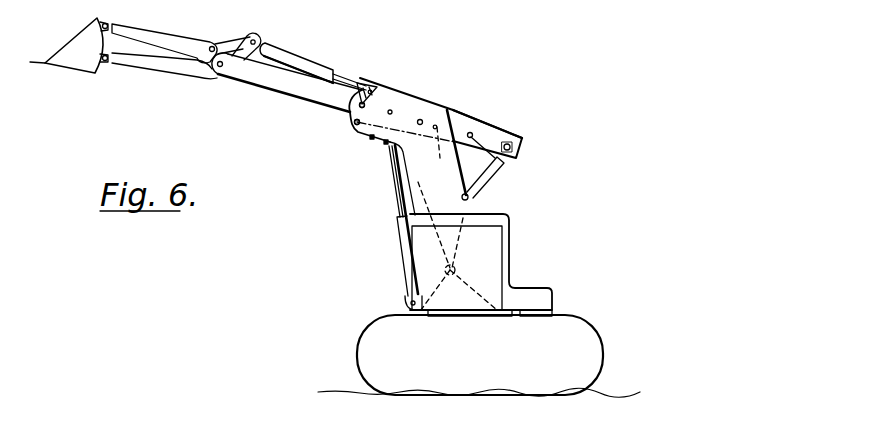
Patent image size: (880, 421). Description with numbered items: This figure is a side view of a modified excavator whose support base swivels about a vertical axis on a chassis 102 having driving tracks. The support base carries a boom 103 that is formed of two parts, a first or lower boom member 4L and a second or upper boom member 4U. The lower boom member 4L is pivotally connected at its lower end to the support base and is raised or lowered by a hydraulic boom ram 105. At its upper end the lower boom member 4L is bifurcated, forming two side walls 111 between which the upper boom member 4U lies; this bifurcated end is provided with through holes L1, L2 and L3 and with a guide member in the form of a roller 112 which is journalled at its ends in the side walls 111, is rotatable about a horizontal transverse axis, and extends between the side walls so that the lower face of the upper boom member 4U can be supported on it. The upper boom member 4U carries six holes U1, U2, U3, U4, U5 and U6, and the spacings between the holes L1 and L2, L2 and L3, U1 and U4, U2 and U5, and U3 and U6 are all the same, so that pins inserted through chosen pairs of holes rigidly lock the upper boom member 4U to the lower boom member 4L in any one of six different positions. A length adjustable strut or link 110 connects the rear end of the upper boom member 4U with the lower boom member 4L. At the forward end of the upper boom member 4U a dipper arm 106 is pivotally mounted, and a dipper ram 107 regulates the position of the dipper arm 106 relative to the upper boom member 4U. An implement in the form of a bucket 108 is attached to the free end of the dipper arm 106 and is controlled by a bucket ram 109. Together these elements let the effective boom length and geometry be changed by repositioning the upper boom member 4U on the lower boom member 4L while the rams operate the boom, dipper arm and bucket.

The chassis 102 is at (386, 330).
The boom 103 is at (418, 207).
The hydraulic boom ram 105 is at (405, 261).
The dipper arm 106 is at (182, 63).
The dipper ram 107 is at (288, 55).
The bucket 108 is at (73, 62).
The bucket ram 109 is at (152, 40).
The length adjustable strut 110 is at (490, 187).
The side walls 111 is at (384, 145).
The roller 112 is at (369, 139).
The upper boom member 4U is at (329, 85).
The lower boom member 4L is at (433, 190).
The through hole L1 is at (353, 126).
The through hole L2 is at (480, 124).
The through hole L3 is at (363, 103).
The hole U1 is at (364, 106).
The hole U2 is at (375, 120).
The hole U3 is at (450, 155).
The hole U4 is at (422, 121).
The hole U5 is at (484, 166).
The hole U6 is at (518, 148).